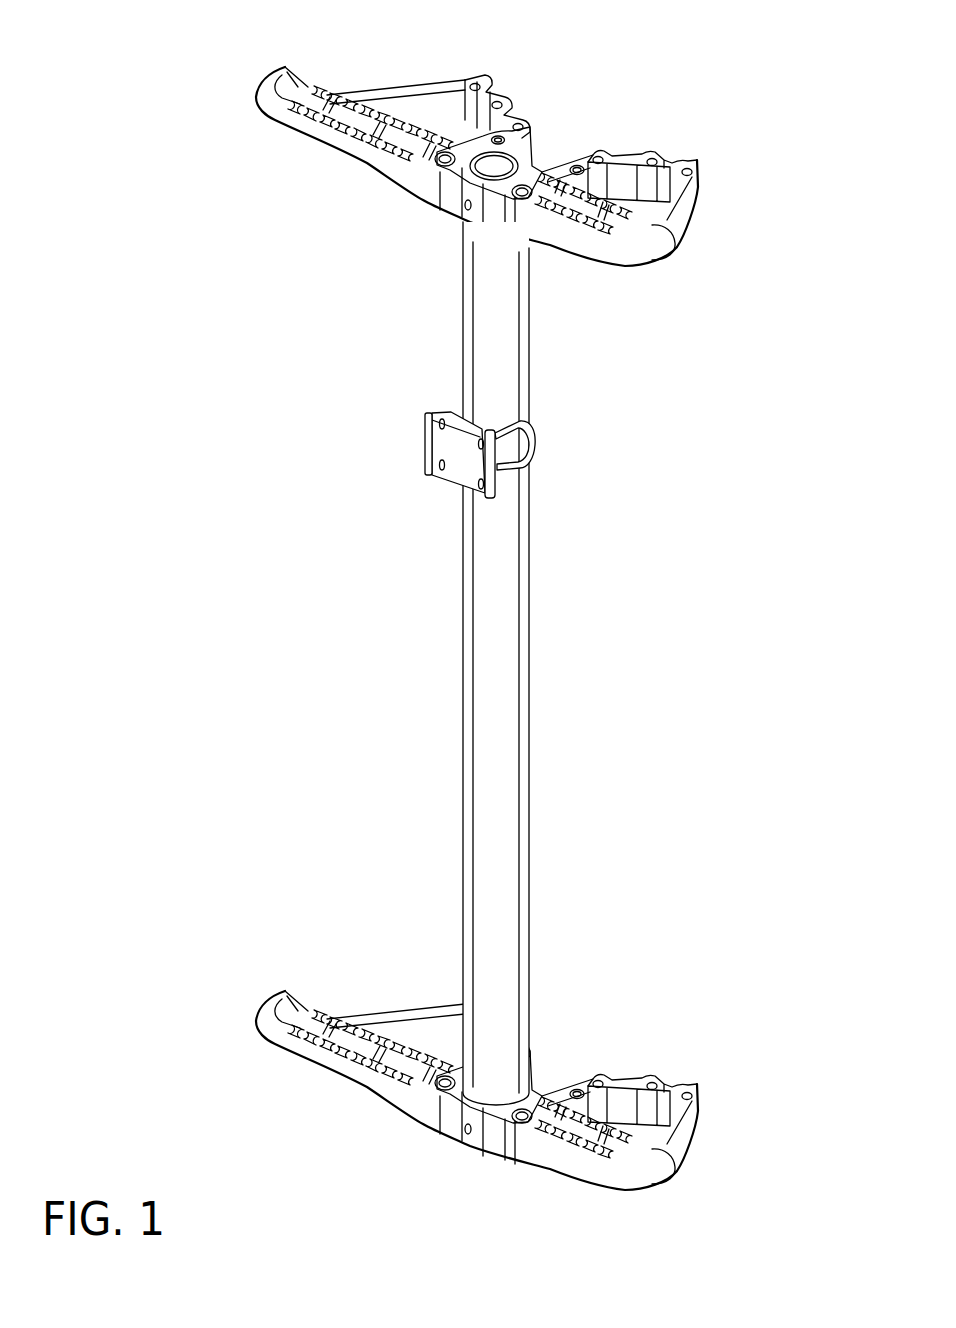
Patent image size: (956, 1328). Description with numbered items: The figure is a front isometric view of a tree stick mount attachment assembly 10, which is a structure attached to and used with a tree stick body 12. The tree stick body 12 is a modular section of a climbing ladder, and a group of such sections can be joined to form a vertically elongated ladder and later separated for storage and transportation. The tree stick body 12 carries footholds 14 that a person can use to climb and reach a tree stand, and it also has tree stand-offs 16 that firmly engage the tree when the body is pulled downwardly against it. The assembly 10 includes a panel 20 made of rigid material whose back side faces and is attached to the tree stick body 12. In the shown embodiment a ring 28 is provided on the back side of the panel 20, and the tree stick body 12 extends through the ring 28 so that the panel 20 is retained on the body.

The tree stick mount attachment assembly 10 is at (488, 601).
The tree stick body 12 is at (548, 765).
The footholds 14 is at (266, 104).
The tree stand-offs 16 is at (485, 78).
The panel 20 is at (426, 428).
The ring 28 is at (528, 463).